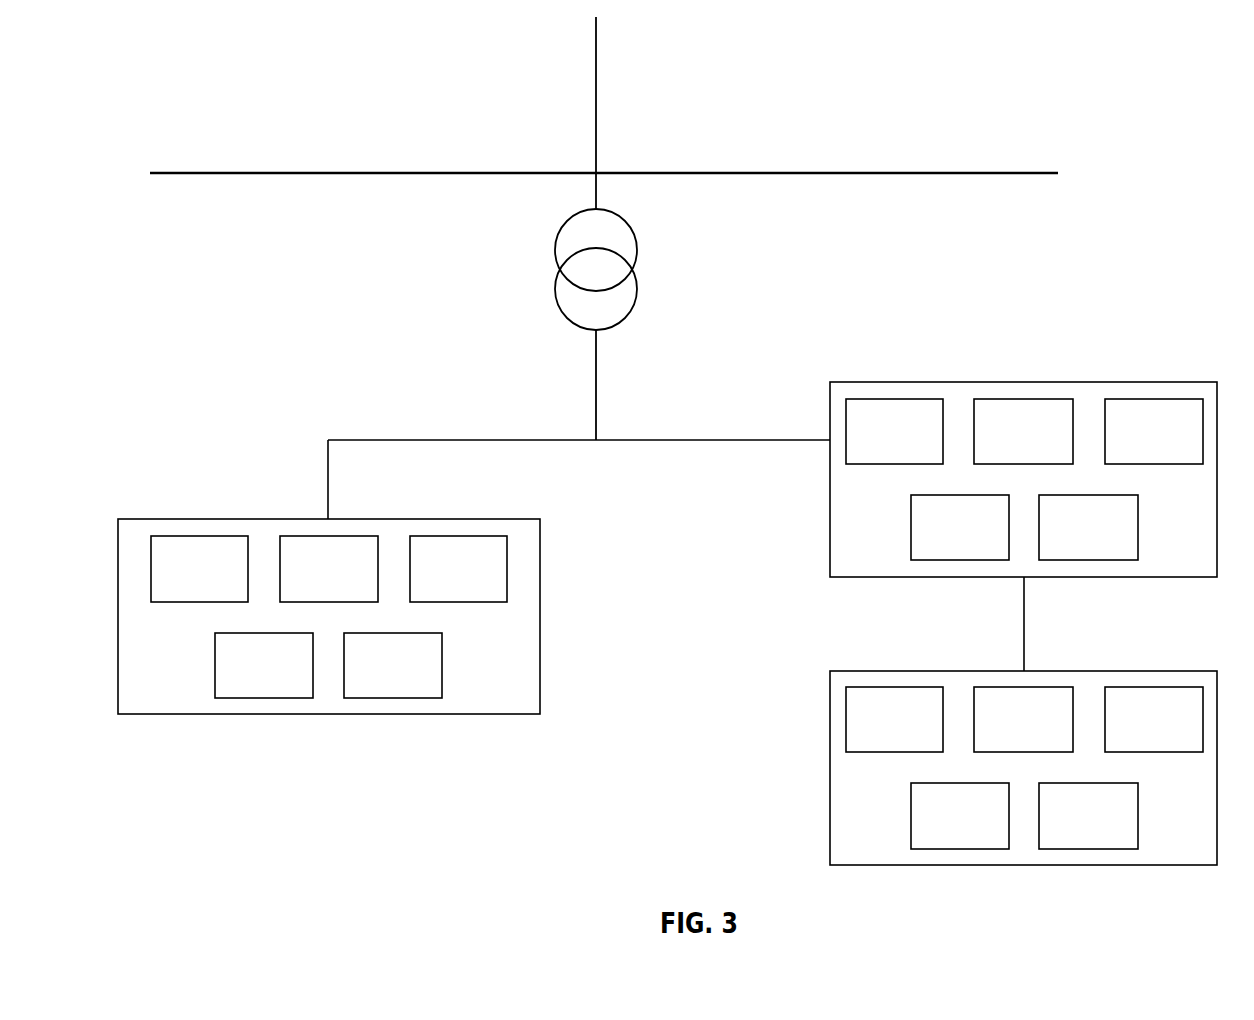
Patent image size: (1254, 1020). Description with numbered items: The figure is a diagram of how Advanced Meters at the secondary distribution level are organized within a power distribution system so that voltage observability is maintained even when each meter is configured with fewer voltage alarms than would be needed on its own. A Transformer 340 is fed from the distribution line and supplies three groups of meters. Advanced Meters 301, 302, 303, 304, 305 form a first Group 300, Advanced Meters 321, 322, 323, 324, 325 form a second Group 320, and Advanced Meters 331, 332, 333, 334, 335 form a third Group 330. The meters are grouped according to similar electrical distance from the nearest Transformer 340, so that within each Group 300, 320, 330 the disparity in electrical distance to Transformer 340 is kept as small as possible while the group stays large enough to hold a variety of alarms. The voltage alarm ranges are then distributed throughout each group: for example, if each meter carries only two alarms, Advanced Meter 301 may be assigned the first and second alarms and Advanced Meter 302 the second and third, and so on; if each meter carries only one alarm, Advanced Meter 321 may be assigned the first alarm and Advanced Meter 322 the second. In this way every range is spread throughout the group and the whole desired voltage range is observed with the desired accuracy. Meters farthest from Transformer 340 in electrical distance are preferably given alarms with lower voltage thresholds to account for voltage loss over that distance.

The group 300 is at (329, 594).
The Advanced Meter 301 is at (199, 569).
The Advanced Meter 302 is at (329, 569).
The Advanced Meter 303 is at (264, 665).
The Advanced Meter 304 is at (393, 665).
The Advanced Meter 305 is at (458, 569).
The group 320 is at (1023, 456).
The Advanced Meter 321 is at (894, 431).
The Advanced Meter 322 is at (1023, 431).
The Advanced Meter 323 is at (1154, 431).
The Advanced Meter 324 is at (960, 527).
The Advanced Meter 325 is at (1088, 527).
The group 330 is at (1023, 744).
The Advanced Meter 331 is at (894, 719).
The Advanced Meter 332 is at (1023, 719).
The Advanced Meter 333 is at (1154, 719).
The Advanced Meter 334 is at (1088, 816).
The Advanced Meter 335 is at (960, 816).
The transformer 340 is at (623, 269).